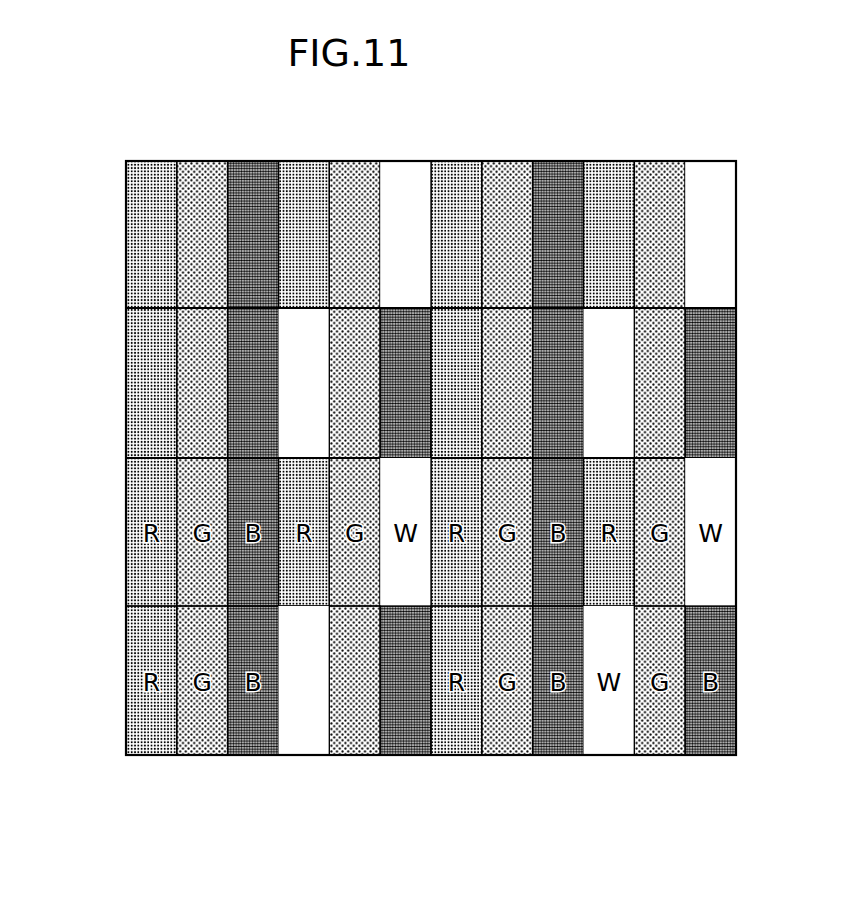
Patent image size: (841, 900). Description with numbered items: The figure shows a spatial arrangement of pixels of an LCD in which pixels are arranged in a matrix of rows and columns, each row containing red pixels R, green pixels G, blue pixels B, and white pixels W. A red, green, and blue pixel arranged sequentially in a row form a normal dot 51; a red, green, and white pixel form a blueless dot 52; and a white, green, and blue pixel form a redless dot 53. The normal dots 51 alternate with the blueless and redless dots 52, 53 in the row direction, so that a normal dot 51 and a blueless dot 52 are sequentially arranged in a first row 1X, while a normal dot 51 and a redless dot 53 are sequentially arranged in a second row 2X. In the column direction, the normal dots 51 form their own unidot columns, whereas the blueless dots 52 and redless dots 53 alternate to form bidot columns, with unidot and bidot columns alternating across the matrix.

The normal dot 51 is at (269, 150).
The blueless dot 52 is at (422, 150).
The redless dot 53 is at (273, 750).
The first row 1X is at (107, 228).
The second row 2X is at (107, 378).